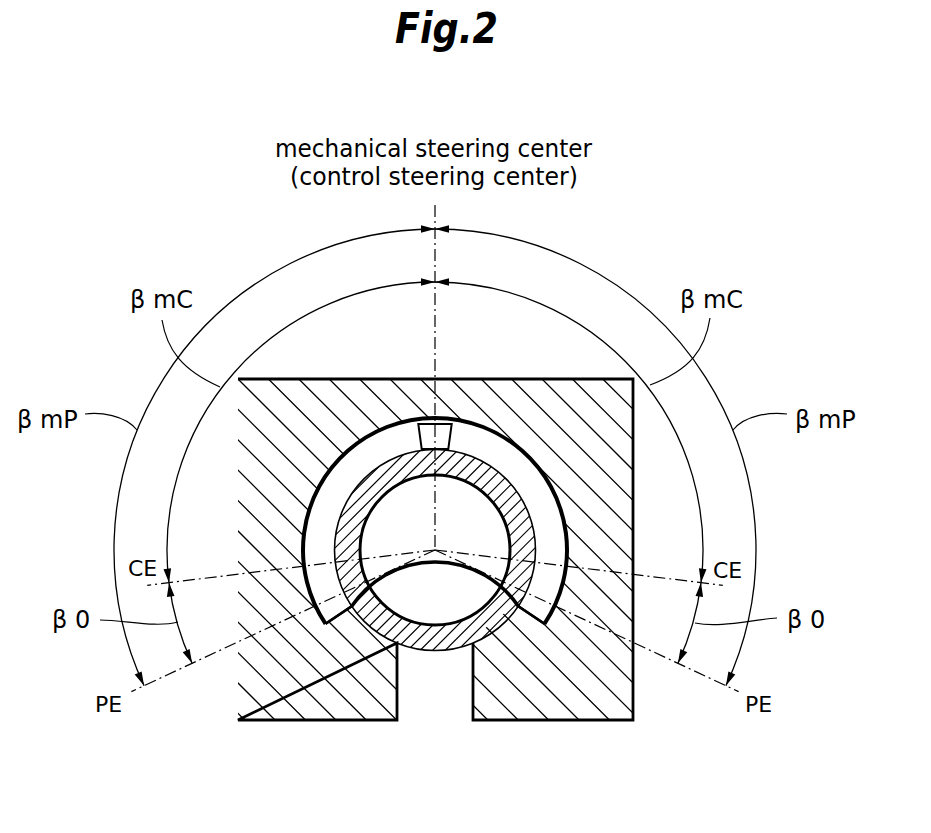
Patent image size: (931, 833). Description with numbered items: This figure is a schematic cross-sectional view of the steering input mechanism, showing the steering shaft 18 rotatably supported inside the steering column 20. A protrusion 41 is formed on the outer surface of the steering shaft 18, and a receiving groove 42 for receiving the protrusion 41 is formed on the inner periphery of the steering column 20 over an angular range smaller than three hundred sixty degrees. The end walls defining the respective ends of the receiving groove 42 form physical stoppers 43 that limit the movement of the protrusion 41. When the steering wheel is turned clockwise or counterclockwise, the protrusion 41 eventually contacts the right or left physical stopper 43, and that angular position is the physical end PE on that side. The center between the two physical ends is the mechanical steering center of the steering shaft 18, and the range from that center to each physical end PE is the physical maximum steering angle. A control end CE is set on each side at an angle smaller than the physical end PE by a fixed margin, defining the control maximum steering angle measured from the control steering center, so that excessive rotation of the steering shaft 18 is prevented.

The steering shaft 18 is at (487, 473).
The steering column 20 is at (610, 520).
The protrusion 41 is at (443, 435).
The receiving groove 42 is at (375, 448).
The physical stoppers 43 is at (350, 617).